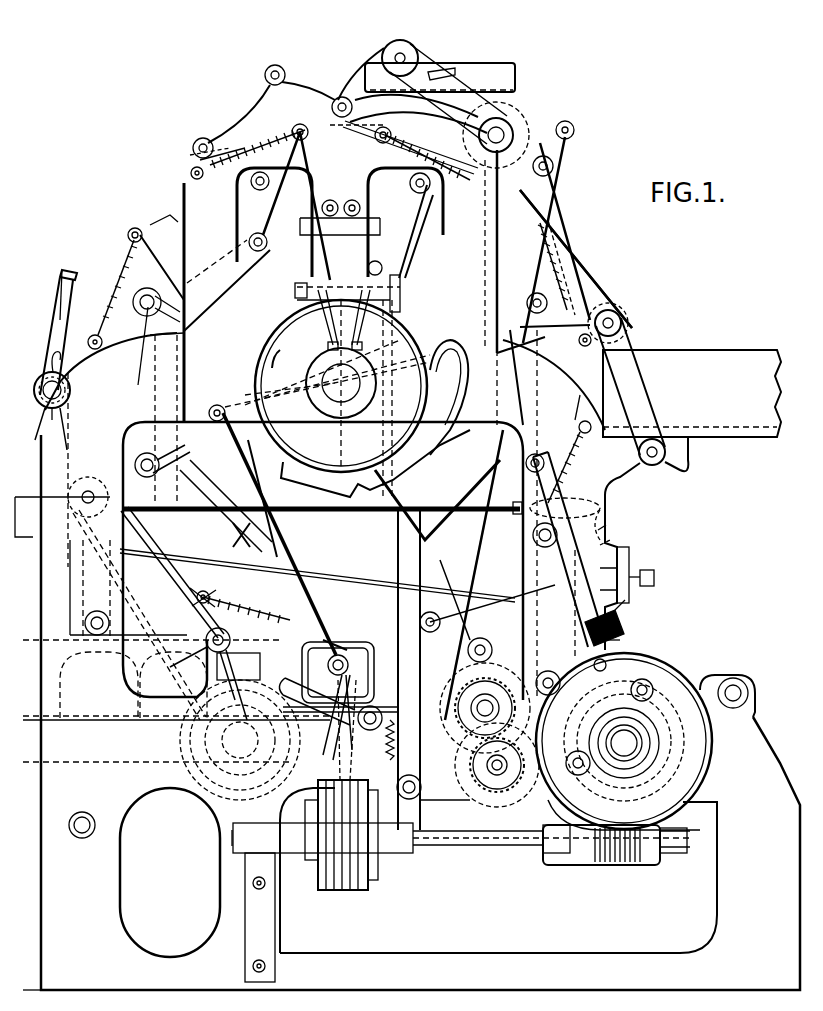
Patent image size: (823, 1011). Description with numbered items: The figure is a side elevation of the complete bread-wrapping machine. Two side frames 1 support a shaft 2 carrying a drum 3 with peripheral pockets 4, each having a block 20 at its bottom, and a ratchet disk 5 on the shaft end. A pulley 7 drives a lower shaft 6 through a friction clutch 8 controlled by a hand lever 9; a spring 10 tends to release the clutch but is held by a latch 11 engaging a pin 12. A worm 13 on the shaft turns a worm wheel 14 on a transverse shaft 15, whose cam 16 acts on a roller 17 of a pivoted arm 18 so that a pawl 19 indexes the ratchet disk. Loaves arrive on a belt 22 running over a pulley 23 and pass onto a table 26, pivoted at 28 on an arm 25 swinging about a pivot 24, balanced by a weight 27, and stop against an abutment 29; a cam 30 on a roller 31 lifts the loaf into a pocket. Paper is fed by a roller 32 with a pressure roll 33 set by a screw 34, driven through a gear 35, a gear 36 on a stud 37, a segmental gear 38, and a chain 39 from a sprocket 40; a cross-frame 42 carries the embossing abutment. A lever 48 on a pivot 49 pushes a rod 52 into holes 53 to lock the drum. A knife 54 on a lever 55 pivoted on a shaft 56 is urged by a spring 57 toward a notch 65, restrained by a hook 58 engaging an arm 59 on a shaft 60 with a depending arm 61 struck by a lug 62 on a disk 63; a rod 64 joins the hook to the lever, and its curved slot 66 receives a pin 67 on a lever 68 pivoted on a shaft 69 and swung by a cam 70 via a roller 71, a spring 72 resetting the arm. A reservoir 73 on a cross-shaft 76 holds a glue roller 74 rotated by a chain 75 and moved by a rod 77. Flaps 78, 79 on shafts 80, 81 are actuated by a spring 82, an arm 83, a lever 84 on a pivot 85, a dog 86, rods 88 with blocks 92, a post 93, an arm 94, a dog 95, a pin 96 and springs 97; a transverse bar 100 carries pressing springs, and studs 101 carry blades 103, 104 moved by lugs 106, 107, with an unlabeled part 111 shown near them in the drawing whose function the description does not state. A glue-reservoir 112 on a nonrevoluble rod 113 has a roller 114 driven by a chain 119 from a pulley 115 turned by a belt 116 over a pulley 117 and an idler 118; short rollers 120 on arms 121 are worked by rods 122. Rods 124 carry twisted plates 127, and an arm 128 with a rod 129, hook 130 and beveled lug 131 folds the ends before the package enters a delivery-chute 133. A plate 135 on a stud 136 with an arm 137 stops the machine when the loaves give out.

The side frame 1 is at (407, 661).
The shaft 2 is at (341, 383).
The drum 3 is at (321, 521).
The pocket 4 is at (558, 281).
The ratchet disk 5 is at (337, 400).
The shaft 6 is at (470, 848).
The pulley 7 is at (348, 892).
The friction clutch 8 is at (374, 882).
The hand lever 9 is at (403, 759).
The spring 10 is at (360, 892).
The latch 11 is at (323, 717).
The pin 12 is at (475, 720).
The worm 13 is at (618, 865).
The worm wheel 14 is at (688, 805).
The transverse shaft 15 is at (650, 765).
The cam 16 is at (712, 744).
The roller 17 is at (660, 680).
The pivoted arm 18 is at (545, 671).
The pawl 19 is at (465, 355).
The block 20 is at (225, 520).
The belt 22 is at (95, 762).
The pulley 23 is at (240, 740).
The pivot 24 is at (748, 692).
The arm 25 is at (712, 680).
The table 26 is at (346, 640).
The weight 27 is at (312, 870).
The pivot 28 is at (317, 705).
The abutment 29 is at (389, 670).
The cam 30 is at (660, 780).
The roller 31 is at (612, 650).
The roller 32 is at (470, 840).
The pressure roll 33 is at (495, 600).
The screw 34 is at (654, 576).
The gear 35 is at (445, 797).
The gear 36 is at (497, 790).
The stud 37 is at (500, 780).
The segmental gear 38 is at (545, 853).
The chain 39 is at (280, 792).
The sprocket 40 is at (500, 810).
The cross-frame 42 is at (612, 552).
The lever 48 is at (590, 548).
The pivot 49 is at (612, 630).
The rod 52 is at (540, 450).
The hole 53 is at (565, 280).
The knife 54 is at (85, 280).
The lever 55 is at (62, 290).
The transverse shaft 56 is at (45, 378).
The spring 57 is at (48, 405).
The hook 58 is at (600, 505).
The arm 59 is at (600, 520).
The shaft 60 is at (530, 540).
The depending arm 61 is at (556, 582).
The lug 62 is at (690, 690).
The disk 63 is at (672, 853).
The rod 64 is at (326, 513).
The notch 65 is at (575, 290).
The curved slot 66 is at (598, 480).
The pin 67 is at (522, 522).
The lever 68 is at (565, 430).
The transverse shaft 69 is at (618, 628).
The cam 70 is at (660, 745).
The roller 71 is at (578, 865).
The spring 72 is at (628, 565).
The reservoir 73 is at (28, 540).
The roller 74 is at (75, 490).
The chain 75 is at (168, 588).
The cross-shaft 76 is at (88, 617).
The rod 77 is at (317, 562).
The flap 78 is at (132, 232).
The flap 79 is at (222, 150).
The shaft 80 is at (140, 225).
The shaft 81 is at (190, 173).
The spring 82 is at (156, 296).
The arm 83 is at (543, 315).
The lever 84 is at (165, 222).
The pivot 85 is at (272, 262).
The dog 86 is at (152, 238).
The rod 88 is at (390, 415).
The block 92 is at (402, 288).
The post 93 is at (296, 305).
The arm 94 is at (296, 202).
The dog 95 is at (200, 140).
The pin 96 is at (203, 138).
The spring 97 is at (232, 150).
The transverse bar 100 is at (272, 66).
The stud 101 is at (342, 222).
The blade 103 is at (400, 203).
The blade 104 is at (259, 252).
The lug 106 is at (240, 320).
The lug 107 is at (344, 320).
The frame 111 is at (372, 180).
The glue-reservoir 112 is at (490, 75).
The nonrevoluble rod 113 is at (505, 125).
The roller 114 is at (408, 45).
The pulley 115 is at (565, 120).
The belt 116 is at (555, 225).
The pulley 117 is at (623, 323).
The idler 118 is at (555, 160).
The chain 119 is at (445, 68).
The short roller 120 is at (338, 98).
The arm 121 is at (425, 109).
The rod 122 is at (490, 472).
The rod 124 is at (297, 344).
The twisted plate 127 is at (322, 120).
The arm 128 is at (218, 403).
The rod 129 is at (238, 470).
The hook 130 is at (336, 650).
The beveled lug 131 is at (326, 727).
The delivery-chute 133 is at (692, 393).
The plate 135 is at (319, 672).
The stud 136 is at (195, 618).
The arm 137 is at (215, 650).